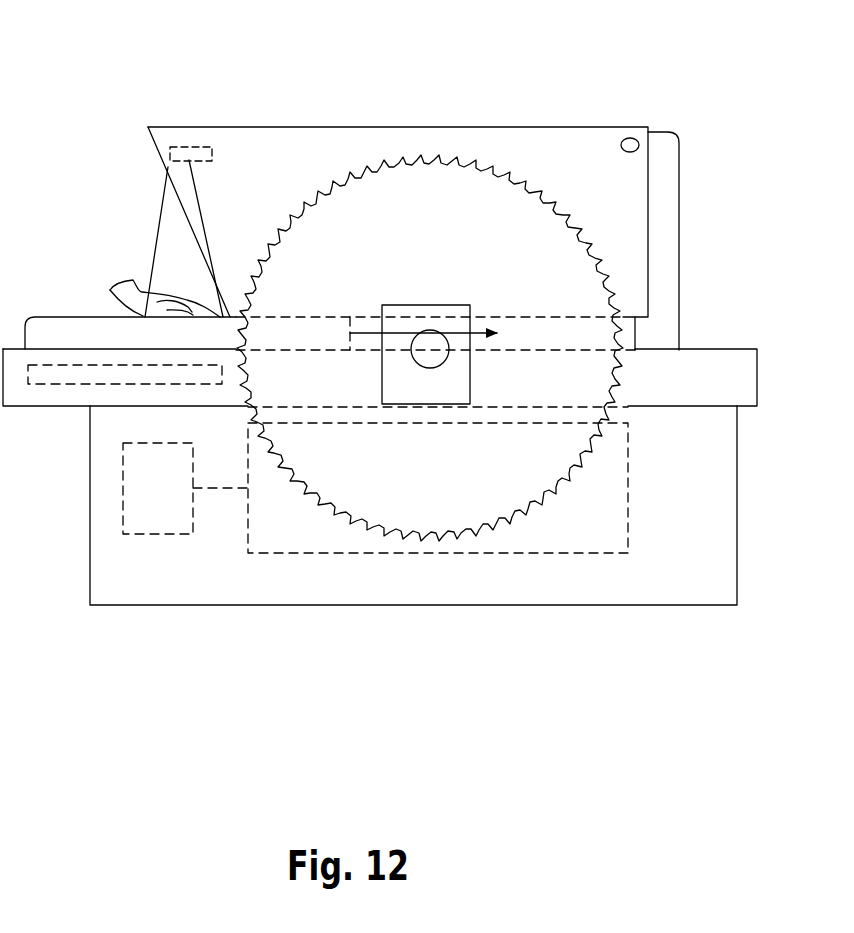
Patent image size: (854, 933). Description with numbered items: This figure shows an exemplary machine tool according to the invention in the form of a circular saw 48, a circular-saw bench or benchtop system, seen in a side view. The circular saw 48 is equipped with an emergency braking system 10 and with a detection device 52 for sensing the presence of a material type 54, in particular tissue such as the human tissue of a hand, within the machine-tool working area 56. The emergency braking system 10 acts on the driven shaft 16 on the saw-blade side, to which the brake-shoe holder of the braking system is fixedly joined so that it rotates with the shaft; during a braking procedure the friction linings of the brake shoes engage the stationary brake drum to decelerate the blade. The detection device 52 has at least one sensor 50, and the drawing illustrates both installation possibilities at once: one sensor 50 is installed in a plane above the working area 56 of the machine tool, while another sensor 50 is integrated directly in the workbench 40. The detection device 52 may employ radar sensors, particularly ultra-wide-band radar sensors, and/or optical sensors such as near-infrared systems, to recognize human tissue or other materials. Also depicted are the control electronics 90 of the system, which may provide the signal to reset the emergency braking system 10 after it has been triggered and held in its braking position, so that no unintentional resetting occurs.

The circular saw 48 is at (692, 77).
The workbench 40 is at (714, 363).
The emergency braking system 10 is at (453, 392).
The driven shaft 16 is at (430, 360).
The control electronics 90 is at (159, 523).
The detection device 52 is at (215, 143).
The sensor 50 is at (189, 160).
The material type 54 is at (127, 290).
The machine-tool working area 56 is at (177, 322).